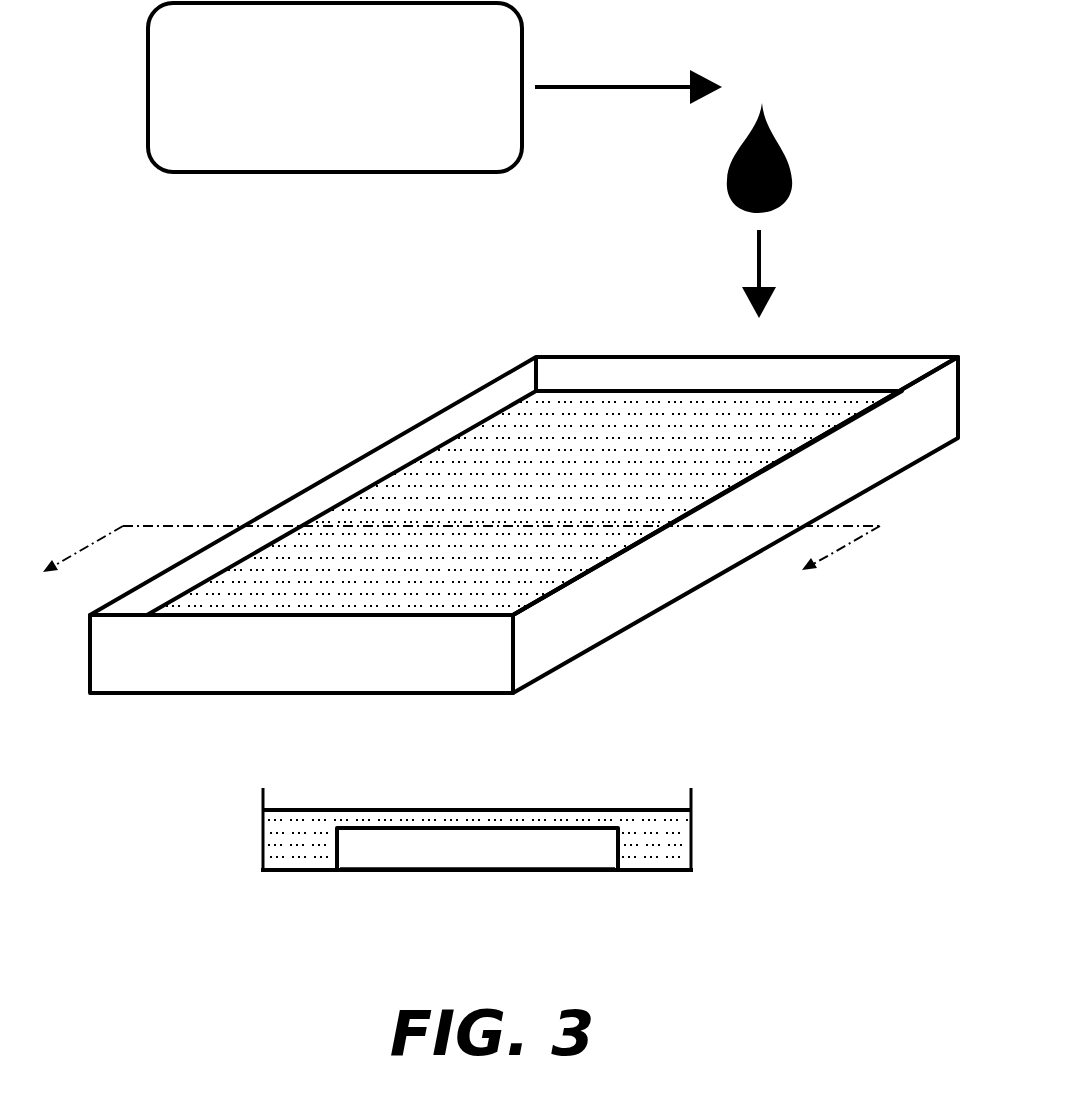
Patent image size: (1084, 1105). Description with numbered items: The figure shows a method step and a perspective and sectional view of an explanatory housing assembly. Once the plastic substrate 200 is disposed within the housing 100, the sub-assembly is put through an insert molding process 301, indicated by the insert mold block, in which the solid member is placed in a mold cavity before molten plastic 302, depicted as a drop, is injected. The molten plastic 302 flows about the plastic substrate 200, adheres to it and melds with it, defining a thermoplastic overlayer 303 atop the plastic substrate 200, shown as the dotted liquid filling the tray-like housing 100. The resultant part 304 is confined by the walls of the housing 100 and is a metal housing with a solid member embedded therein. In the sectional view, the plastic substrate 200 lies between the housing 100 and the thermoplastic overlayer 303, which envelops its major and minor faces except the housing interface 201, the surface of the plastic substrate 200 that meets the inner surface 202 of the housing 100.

The housing 100 is at (500, 615).
The plastic substrate 200 is at (548, 845).
The housing interface 201 is at (402, 867).
The inner surface 202 is at (302, 867).
The insert molding process 301 is at (267, 172).
The molten plastic 302 is at (792, 185).
The thermoplastic overlayer 303 is at (550, 450).
The resultant part 304 is at (912, 485).